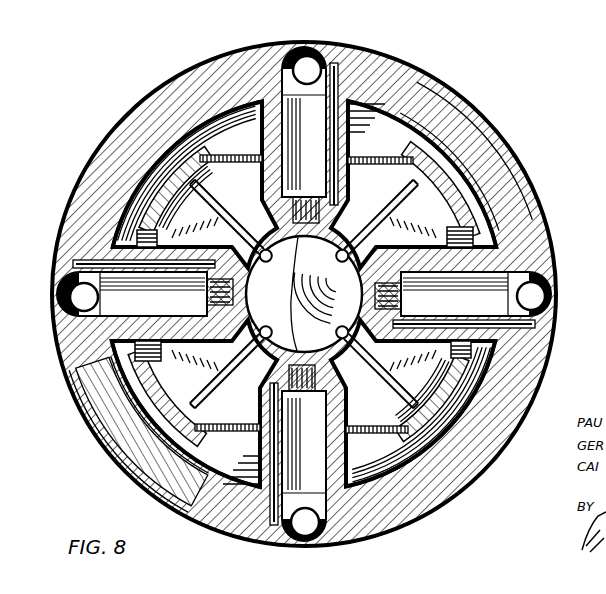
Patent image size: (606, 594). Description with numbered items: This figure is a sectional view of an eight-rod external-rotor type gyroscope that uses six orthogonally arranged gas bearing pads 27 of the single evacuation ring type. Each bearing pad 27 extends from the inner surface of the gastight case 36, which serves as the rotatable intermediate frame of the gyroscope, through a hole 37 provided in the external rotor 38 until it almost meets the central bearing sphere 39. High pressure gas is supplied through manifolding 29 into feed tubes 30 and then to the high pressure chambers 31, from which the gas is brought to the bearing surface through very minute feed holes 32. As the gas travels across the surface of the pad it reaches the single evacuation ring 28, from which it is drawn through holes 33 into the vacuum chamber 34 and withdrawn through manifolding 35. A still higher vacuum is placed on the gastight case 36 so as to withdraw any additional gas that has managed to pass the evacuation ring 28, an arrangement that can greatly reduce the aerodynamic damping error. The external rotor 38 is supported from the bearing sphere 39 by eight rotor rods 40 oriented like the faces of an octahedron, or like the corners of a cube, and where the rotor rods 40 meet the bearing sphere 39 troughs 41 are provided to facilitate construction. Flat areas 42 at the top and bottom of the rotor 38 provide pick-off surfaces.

The bearing pad 27 is at (352, 446).
The evacuation ring 28 is at (360, 342).
The manifolding 29 is at (268, 528).
The feed tube 30 is at (245, 530).
The high pressure chamber 31 is at (412, 348).
The feed hole 32 is at (405, 308).
The hole 33 is at (350, 392).
The vacuum chamber 34 is at (318, 480).
The manifolding 35 is at (293, 546).
The gastight case 36 is at (420, 84).
The hole 37 is at (74, 375).
The external rotor 38 is at (480, 185).
The bearing sphere 39 is at (350, 376).
The rotor rod 40 is at (392, 381).
The trough 41 is at (278, 312).
The flat area 42 is at (200, 446).